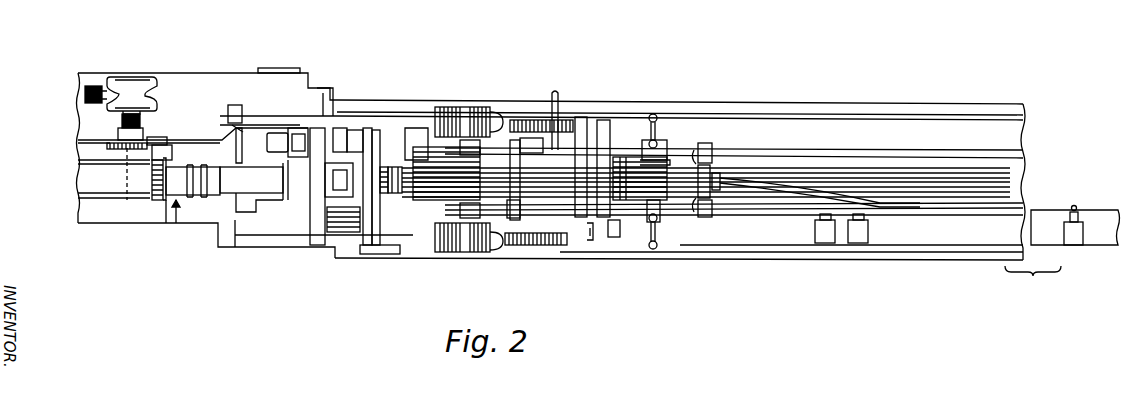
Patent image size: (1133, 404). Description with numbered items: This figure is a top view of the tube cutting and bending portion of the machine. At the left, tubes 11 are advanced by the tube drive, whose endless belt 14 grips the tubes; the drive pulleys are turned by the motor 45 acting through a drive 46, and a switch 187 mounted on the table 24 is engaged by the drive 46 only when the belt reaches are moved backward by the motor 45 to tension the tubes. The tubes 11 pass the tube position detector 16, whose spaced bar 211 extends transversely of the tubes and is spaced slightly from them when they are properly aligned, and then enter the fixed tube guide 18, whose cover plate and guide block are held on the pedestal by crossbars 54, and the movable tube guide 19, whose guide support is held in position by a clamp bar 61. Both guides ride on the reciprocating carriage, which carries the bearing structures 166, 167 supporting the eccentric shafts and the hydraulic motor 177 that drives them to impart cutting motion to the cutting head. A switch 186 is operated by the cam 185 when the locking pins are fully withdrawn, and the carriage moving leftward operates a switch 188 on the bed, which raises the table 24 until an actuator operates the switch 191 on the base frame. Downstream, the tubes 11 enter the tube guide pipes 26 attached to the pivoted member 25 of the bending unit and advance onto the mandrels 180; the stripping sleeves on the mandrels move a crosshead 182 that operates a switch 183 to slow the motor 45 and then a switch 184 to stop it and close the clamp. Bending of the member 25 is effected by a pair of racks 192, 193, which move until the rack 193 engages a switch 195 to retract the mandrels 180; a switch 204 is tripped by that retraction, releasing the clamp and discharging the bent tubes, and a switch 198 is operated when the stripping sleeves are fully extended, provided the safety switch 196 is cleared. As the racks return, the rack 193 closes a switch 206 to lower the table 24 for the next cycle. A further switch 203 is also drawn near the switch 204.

The tube 11 is at (163, 200).
The endless belt 14 is at (80, 178).
The tube position detector 16 is at (153, 196).
The fixed tube guide 18 is at (176, 210).
The movable tube guide 19 is at (259, 207).
The table 24 is at (204, 78).
The pivoted member 25 is at (412, 138).
The tube guide pipe 26 is at (392, 220).
The motor 45 is at (132, 92).
The drive 46 is at (118, 130).
The crossbar 54 is at (189, 201).
The clamp bar 61 is at (286, 202).
The bearing structure 166 is at (360, 132).
The bearing structure 167 is at (337, 227).
The hydraulic motor 177 is at (276, 136).
The mandrel 180 is at (520, 190).
The crosshead 182 is at (618, 158).
The switch 183 is at (640, 158).
The switch 184 is at (666, 220).
The cam 185 is at (347, 164).
The switch 186 is at (336, 128).
The switch 187 is at (168, 140).
The switch 188 is at (239, 104).
The switch 191 is at (288, 72).
The rack 192 is at (522, 120).
The rack 193 is at (540, 235).
The switch 195 is at (370, 254).
The switch 196 is at (538, 138).
The switch 198 is at (1078, 240).
The first switch 203 is at (823, 242).
The switch 204 is at (855, 241).
The switch 206 is at (590, 232).
The bar 211 is at (144, 183).